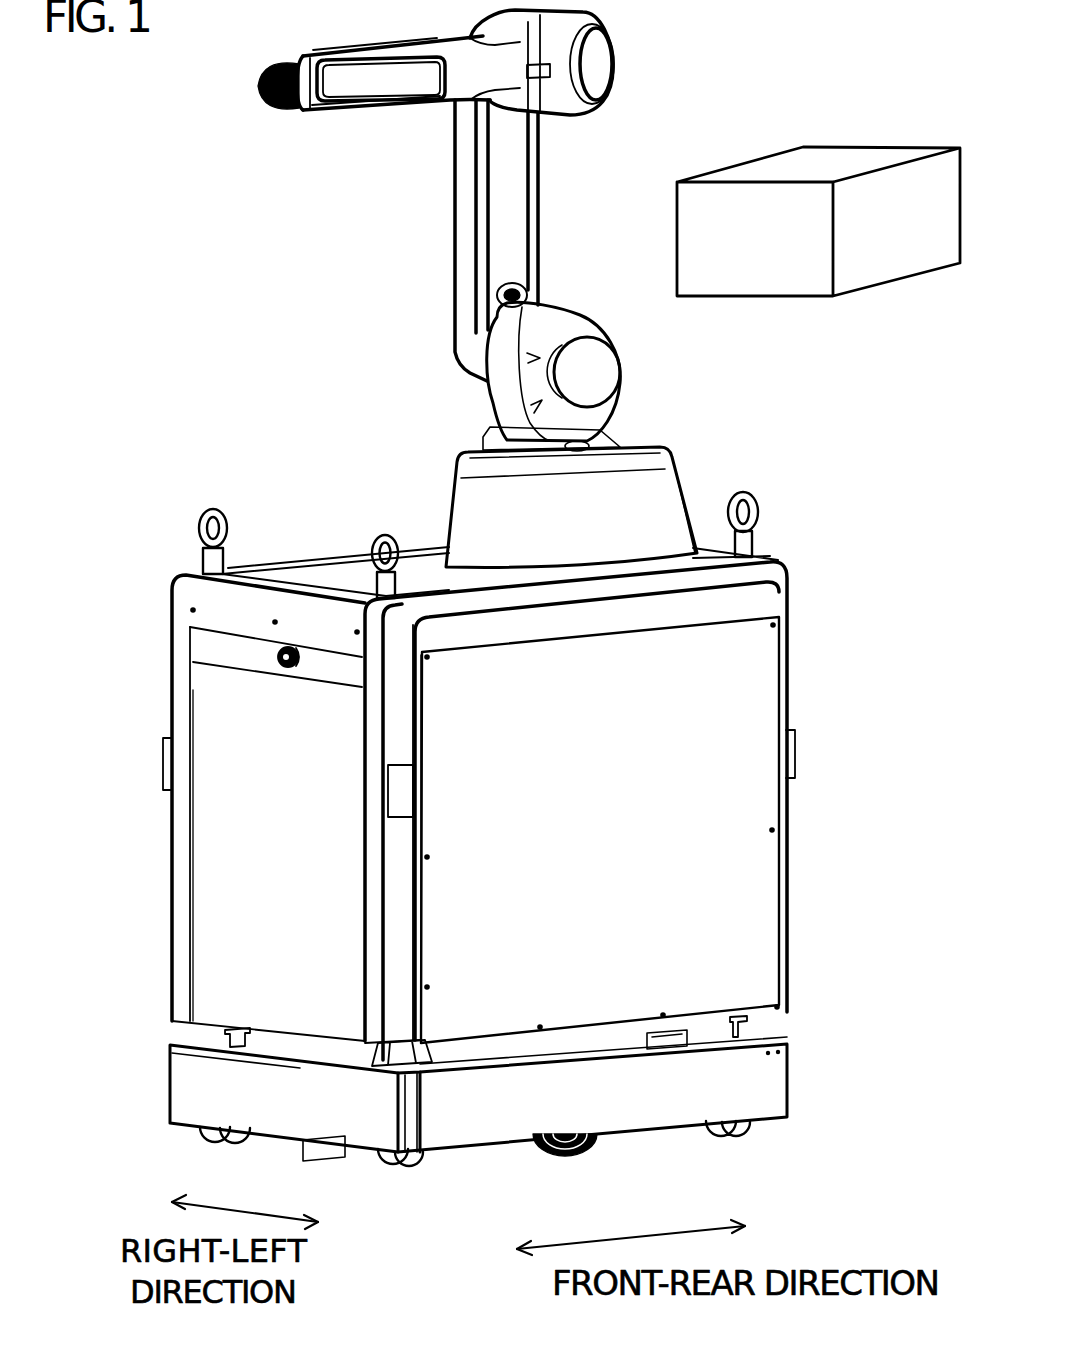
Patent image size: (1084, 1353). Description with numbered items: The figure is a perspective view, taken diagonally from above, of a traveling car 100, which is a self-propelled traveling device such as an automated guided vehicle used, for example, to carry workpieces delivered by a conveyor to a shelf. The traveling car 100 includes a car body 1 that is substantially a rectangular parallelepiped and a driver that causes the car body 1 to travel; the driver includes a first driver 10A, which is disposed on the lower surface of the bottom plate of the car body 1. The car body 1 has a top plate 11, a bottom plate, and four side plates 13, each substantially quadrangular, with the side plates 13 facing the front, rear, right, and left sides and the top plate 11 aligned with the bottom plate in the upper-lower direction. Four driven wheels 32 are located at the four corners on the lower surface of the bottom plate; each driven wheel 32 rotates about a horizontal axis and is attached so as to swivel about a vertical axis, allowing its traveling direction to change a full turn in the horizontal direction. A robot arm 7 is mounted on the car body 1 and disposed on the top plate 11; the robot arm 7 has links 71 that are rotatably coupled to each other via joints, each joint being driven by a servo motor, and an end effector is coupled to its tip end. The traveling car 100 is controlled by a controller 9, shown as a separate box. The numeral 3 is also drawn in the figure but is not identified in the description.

The traveling car 100 is at (733, 67).
The car body 1 is at (172, 637).
The drive wheel 3 is at (578, 1158).
The robot arm 7 is at (323, 193).
The links 71 is at (327, 114).
The controller 9 is at (840, 170).
The first driver 10A is at (630, 1150).
The top plate 11 is at (318, 573).
The side plates 13 is at (240, 824).
The driven wheels 32 is at (203, 1148).